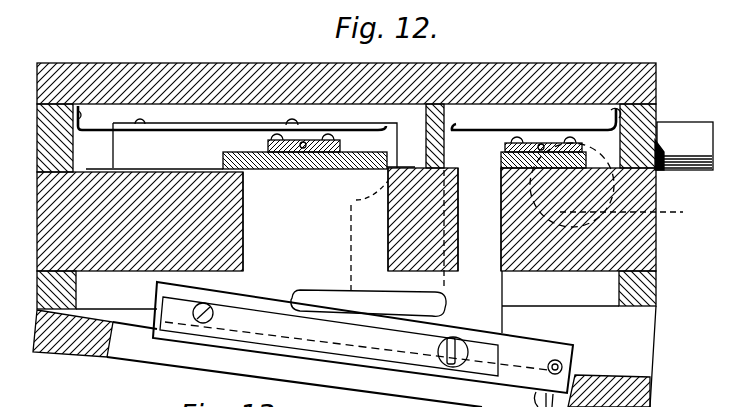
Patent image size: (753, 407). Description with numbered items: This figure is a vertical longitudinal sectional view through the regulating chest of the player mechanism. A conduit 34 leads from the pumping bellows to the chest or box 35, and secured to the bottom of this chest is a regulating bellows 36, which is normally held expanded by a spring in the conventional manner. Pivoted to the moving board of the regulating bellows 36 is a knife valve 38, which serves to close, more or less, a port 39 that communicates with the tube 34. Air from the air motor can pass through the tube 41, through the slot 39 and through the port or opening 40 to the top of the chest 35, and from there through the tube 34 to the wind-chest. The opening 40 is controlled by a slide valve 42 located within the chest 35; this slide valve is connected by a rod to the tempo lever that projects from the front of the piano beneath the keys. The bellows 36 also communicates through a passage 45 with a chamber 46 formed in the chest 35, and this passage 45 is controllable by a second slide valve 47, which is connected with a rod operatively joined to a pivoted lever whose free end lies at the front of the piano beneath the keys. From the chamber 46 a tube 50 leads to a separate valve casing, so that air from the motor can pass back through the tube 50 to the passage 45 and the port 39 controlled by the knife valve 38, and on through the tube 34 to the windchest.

The conduit 34 is at (360, 198).
The chest 35 is at (250, 63).
The regulating bellows 36 is at (637, 347).
The knife valve 38 is at (549, 347).
The port 39 is at (368, 303).
The port 40 is at (315, 219).
The tube 41 is at (621, 185).
The slide valve 42 is at (295, 156).
The passage 45 is at (479, 219).
The chamber 46 is at (536, 115).
The slide valve 47 is at (505, 158).
The tube 50 is at (690, 130).